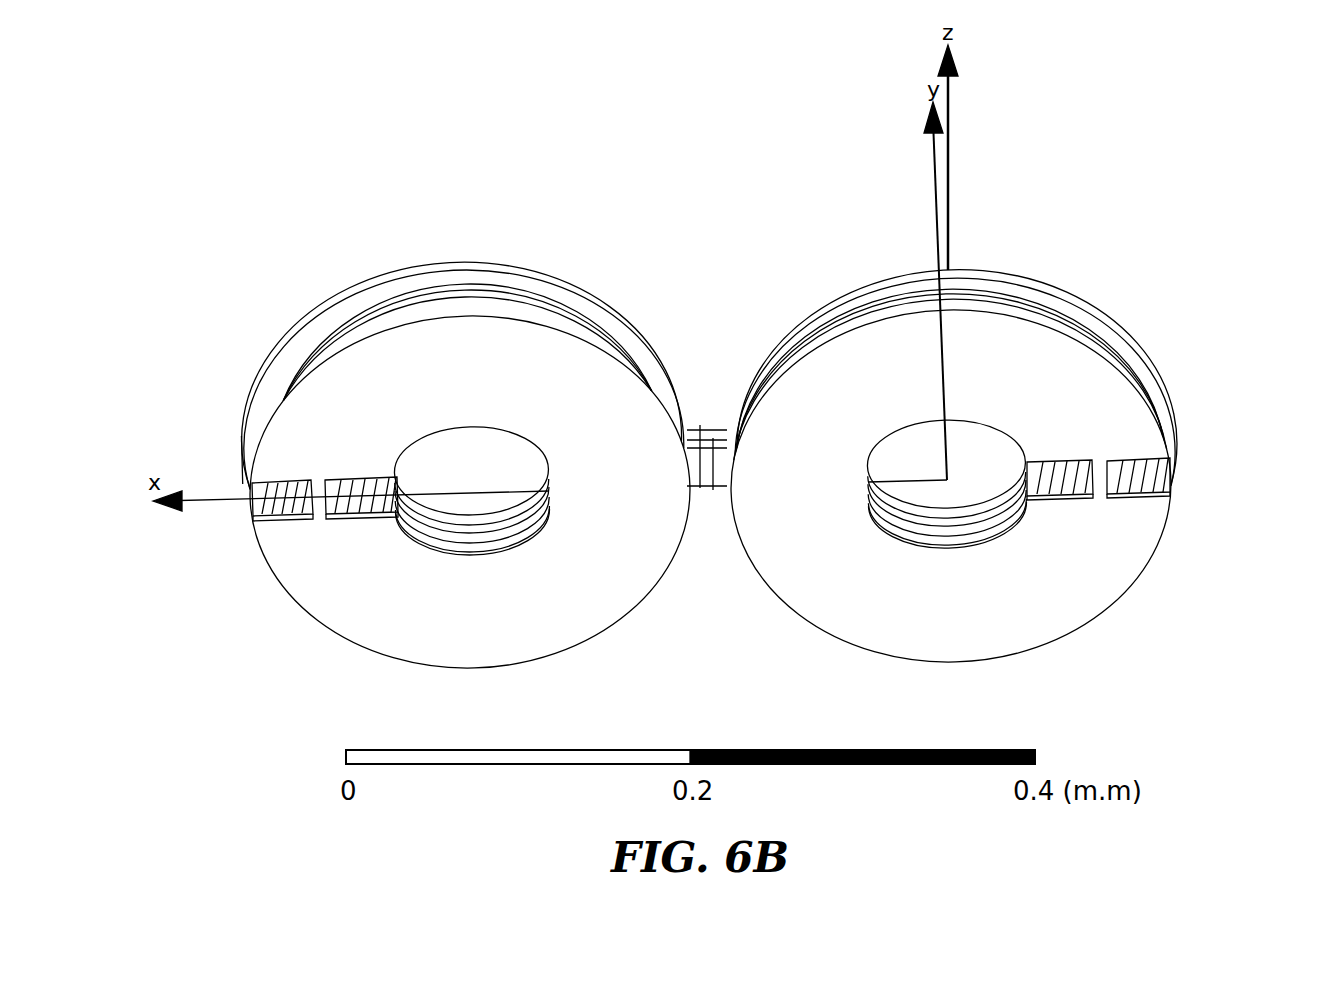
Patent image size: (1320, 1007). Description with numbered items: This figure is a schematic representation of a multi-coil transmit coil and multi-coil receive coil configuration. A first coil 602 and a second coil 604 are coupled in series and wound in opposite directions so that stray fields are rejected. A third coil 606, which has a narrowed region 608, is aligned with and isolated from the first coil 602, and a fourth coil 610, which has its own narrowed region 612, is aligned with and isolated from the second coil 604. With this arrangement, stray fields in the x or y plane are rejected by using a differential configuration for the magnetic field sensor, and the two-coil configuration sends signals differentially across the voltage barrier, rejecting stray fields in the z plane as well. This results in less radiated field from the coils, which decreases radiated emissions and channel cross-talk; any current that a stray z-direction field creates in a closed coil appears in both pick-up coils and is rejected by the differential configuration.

The first coil 602 is at (414, 268).
The second coil 604 is at (1065, 290).
The third coil 606 is at (600, 630).
The narrowed region 608 is at (317, 517).
The fourth coil 610 is at (1050, 640).
The narrowed region 612 is at (1100, 480).